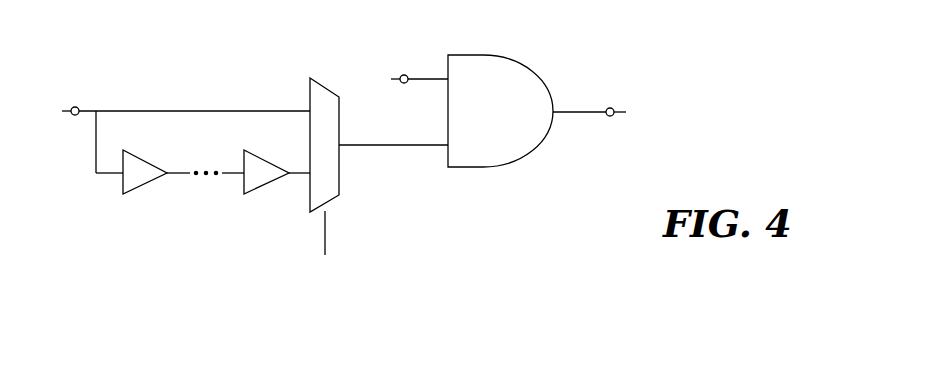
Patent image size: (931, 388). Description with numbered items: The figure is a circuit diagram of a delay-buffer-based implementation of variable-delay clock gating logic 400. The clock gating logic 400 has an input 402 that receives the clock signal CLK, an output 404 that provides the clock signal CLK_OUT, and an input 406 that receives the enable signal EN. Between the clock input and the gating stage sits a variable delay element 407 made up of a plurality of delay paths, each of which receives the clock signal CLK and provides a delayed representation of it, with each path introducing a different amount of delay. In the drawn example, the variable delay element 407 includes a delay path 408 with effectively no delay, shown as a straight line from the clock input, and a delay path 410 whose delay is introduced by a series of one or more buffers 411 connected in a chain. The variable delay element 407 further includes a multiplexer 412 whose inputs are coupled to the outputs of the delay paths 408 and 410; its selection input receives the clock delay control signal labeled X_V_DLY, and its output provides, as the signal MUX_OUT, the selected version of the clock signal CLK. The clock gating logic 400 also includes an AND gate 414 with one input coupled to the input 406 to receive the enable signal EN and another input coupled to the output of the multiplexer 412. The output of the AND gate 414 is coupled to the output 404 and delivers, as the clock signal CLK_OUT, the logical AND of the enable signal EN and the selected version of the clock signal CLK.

The clock gating logic 400 is at (497, 32).
The input 402 is at (75, 106).
The output 404 is at (610, 107).
The input 406 is at (404, 74).
The variable delay element 407 is at (243, 78).
The delay path 408 is at (203, 109).
The delay path 410 is at (225, 193).
The buffer 411 is at (138, 192).
The multiplexer 412 is at (323, 84).
The AND gate 414 is at (503, 121).